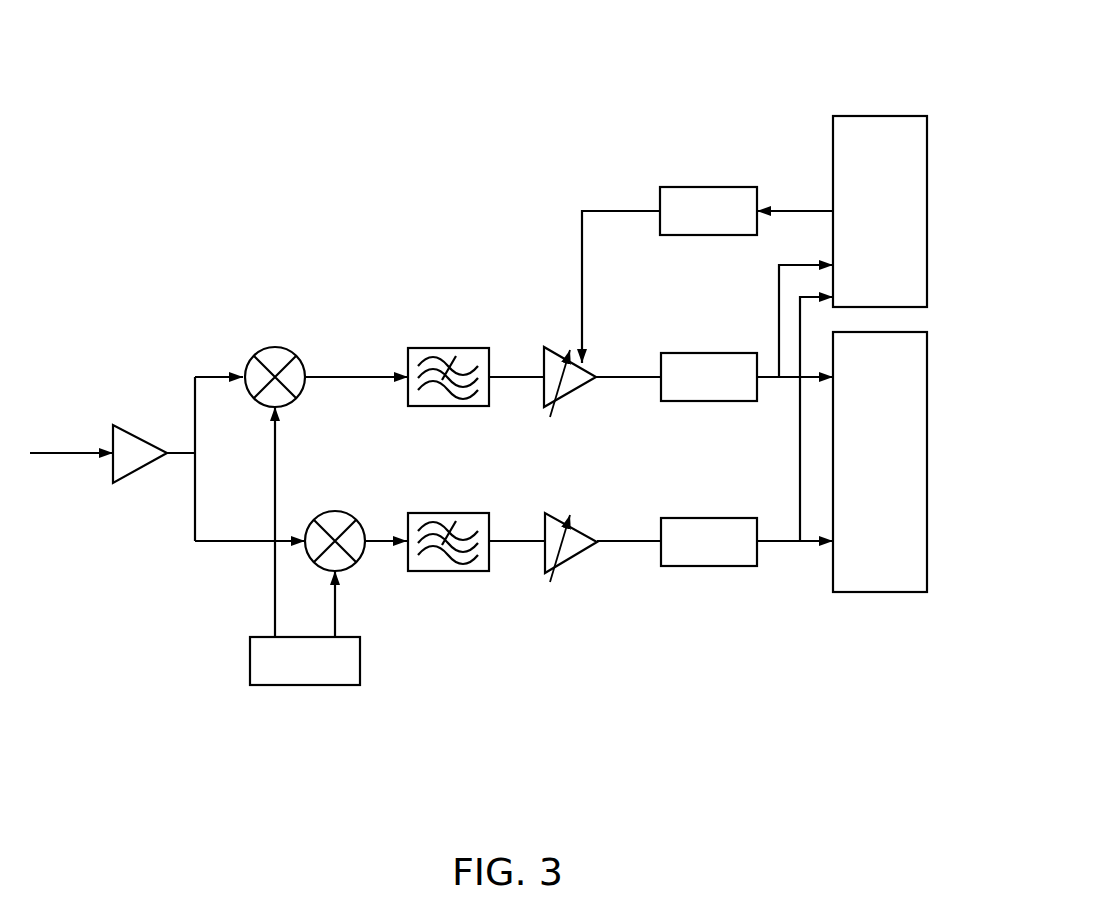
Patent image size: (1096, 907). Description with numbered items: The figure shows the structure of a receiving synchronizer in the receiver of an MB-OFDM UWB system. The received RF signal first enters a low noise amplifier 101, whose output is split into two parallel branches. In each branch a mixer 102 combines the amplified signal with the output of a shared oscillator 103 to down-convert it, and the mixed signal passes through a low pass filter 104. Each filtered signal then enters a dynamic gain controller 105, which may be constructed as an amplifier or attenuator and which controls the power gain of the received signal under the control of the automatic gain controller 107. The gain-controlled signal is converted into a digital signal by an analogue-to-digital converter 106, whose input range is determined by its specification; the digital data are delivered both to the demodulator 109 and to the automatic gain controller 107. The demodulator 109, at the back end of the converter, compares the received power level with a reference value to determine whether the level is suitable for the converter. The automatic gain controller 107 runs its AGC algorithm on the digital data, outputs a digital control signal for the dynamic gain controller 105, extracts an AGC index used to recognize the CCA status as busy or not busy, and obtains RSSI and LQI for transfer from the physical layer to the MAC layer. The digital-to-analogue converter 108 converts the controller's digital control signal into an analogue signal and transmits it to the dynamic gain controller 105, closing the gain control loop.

The low noise amplifier 101 is at (127, 427).
The mixer 102 is at (303, 362).
The oscillator 103 is at (360, 680).
The low pass filter 104 is at (480, 347).
The dynamic gain controller 105 is at (593, 368).
The analogue-to-digital converter 106 is at (710, 185).
The automatic gain controller 107 is at (872, 115).
The digital-to-analogue converter 108 is at (710, 352).
The demodulator 109 is at (893, 593).